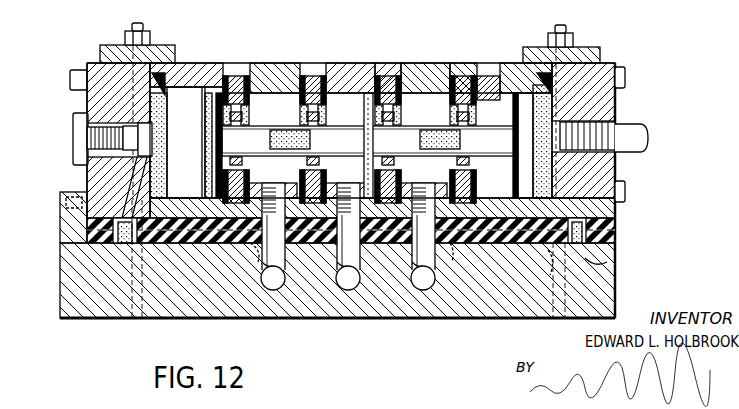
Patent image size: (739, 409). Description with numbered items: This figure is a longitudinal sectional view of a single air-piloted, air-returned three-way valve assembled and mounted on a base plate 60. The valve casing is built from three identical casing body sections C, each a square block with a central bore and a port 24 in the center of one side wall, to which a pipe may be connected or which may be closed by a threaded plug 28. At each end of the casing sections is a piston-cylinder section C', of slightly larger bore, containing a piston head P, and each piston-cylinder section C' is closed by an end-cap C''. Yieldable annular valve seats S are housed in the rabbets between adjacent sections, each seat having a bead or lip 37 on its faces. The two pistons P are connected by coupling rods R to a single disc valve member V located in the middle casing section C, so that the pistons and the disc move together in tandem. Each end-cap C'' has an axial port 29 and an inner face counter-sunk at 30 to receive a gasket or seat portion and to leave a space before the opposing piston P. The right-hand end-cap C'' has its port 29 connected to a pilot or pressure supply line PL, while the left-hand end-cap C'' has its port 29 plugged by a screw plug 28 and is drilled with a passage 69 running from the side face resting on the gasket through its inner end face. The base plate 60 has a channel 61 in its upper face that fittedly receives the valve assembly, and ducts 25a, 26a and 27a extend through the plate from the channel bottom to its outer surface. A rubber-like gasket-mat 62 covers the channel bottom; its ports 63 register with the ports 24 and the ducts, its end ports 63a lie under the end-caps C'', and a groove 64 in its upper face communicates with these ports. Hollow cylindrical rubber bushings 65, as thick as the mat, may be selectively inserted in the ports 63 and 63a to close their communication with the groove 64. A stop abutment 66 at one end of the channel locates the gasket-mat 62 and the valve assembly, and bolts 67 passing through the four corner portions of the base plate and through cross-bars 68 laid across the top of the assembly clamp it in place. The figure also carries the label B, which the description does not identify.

The port 24 is at (271, 193).
The duct or passage 25a is at (424, 289).
The duct or passage 26a is at (347, 287).
The duct or passage 27a is at (275, 289).
The threaded plug 28 is at (72, 145).
The passage or port 29 is at (128, 150).
The counter-sunk portion 30 is at (170, 107).
The bead or lip 37 is at (340, 97).
The base plate 60 is at (600, 263).
The channel 61 is at (515, 242).
The gasket-mat 62 is at (614, 230).
The port 63 is at (288, 252).
The port 63a is at (118, 245).
The groove 64 is at (97, 235).
The rubber-bushing 65 is at (258, 241).
The stop abutment 66 is at (70, 210).
The bolt 67 is at (140, 31).
The cross-bar 68 is at (158, 50).
The passage 69 is at (125, 178).
The bolt head B is at (622, 84).
The valve casing body section C is at (363, 62).
The piston-cylinder section C' is at (351, 60).
The casing end-cap C'' is at (357, 120).
The piston head P is at (212, 121).
The pilot line PL is at (630, 138).
The valve coupling rod R is at (340, 146).
The valve seat S is at (244, 75).
The valve member V is at (366, 106).